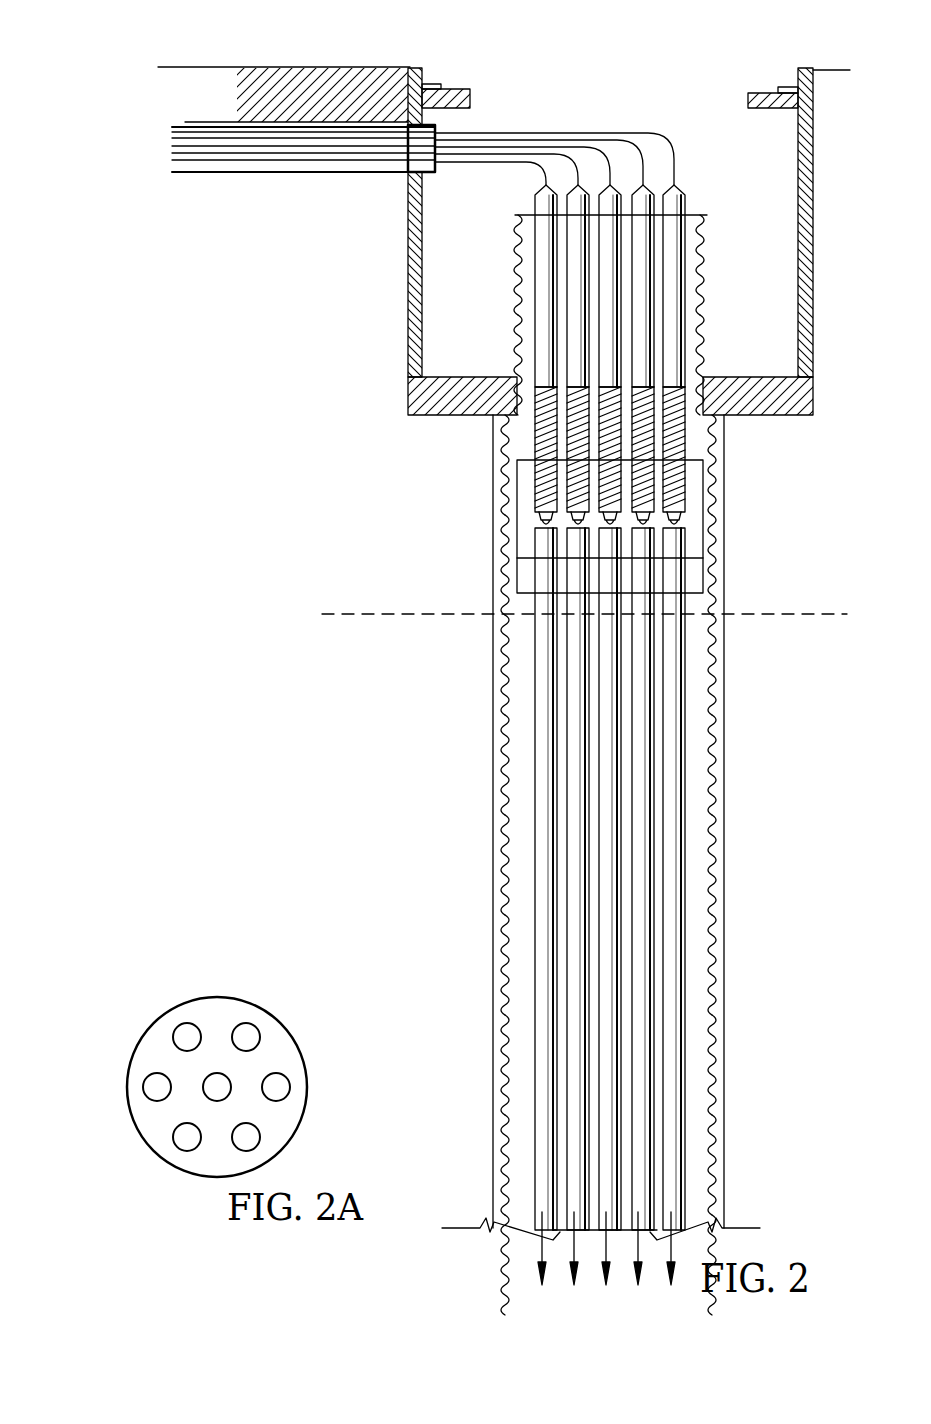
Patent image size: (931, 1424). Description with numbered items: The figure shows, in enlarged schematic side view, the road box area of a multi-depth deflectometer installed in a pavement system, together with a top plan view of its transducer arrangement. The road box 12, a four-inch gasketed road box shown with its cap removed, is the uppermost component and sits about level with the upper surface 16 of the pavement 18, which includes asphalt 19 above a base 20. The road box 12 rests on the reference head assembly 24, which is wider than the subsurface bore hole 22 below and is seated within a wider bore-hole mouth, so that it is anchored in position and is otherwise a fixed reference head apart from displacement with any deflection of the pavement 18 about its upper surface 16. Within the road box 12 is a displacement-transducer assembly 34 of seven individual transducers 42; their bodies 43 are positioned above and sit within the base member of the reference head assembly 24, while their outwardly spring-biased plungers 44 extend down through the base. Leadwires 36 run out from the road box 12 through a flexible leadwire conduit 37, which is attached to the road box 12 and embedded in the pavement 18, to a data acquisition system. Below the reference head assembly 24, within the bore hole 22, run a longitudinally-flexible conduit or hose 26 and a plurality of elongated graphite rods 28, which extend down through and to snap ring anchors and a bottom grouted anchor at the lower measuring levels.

In FIG. 2, the road box 12 is at (806, 68).
In FIG. 2, the upper surface of the pavement 16 is at (170, 67).
In FIG. 2, the pavement 18 is at (388, 82).
In FIG. 2, the asphalt 19 is at (818, 553).
In FIG. 2, the base 20 is at (789, 699).
In FIG. 2, the bore hole 22 is at (723, 698).
In FIG. 2, the reference head assembly 24 is at (418, 392).
In FIG. 2, the longitudinally-flexible conduit or hose 26 is at (712, 831).
In FIG. 2, the elongated rods 28 is at (670, 778).
In FIG. 2A, the displacement-transducer assembly 34 is at (294, 1036).
In FIG. 2, the leadwires 36 is at (485, 152).
In FIG. 2, the leadwire conduit 37 is at (381, 175).
In FIG. 2, the transducers 42 is at (600, 52).
In FIG. 2A, the transducers 42 is at (167, 1085).
In FIG. 2, the bodies of the transducers 43 is at (605, 293).
In FIG. 2, the spring-biased plungers 44 is at (575, 480).